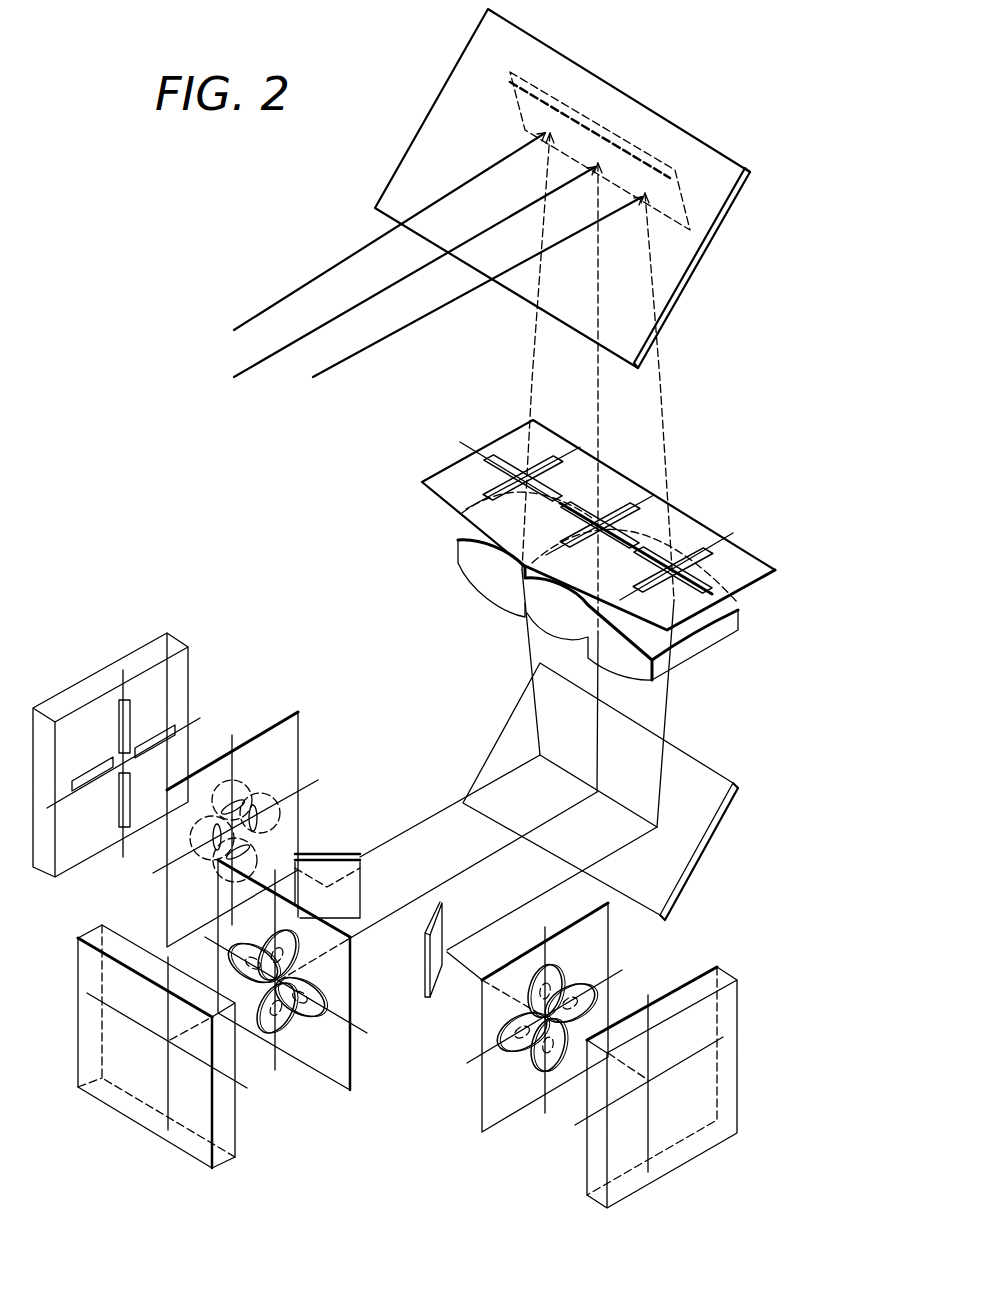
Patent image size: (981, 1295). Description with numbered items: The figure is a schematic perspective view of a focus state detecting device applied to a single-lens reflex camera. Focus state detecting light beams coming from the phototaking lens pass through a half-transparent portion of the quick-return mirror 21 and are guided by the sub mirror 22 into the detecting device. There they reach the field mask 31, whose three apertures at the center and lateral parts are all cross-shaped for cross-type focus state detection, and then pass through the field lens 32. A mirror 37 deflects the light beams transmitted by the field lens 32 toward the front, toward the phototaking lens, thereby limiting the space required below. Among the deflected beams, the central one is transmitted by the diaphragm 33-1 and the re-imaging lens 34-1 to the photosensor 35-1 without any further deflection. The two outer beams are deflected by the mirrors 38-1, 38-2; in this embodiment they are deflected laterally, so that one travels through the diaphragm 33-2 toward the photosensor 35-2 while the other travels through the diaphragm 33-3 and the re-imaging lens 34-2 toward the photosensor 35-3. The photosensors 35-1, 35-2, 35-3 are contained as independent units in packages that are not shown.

The quick-return mirror 21 is at (675, 272).
The sub mirror 22 is at (665, 178).
The field mask 31 is at (743, 565).
The field lens 32 is at (728, 627).
The mirror 37 is at (713, 807).
The photosensor 35-1 is at (187, 1142).
The photosensor 35-2 is at (173, 648).
The photosensor 35-3 is at (705, 980).
The diaphragm 33-1 is at (287, 1036).
The diaphragm 33-2 is at (277, 728).
The diaphragm 33-3 is at (575, 1044).
The re-imaging lens 34-1 is at (278, 1027).
The re-imaging lens 34-2 is at (513, 1057).
The mirror 38-1 is at (342, 854).
The mirror 38-2 is at (423, 997).